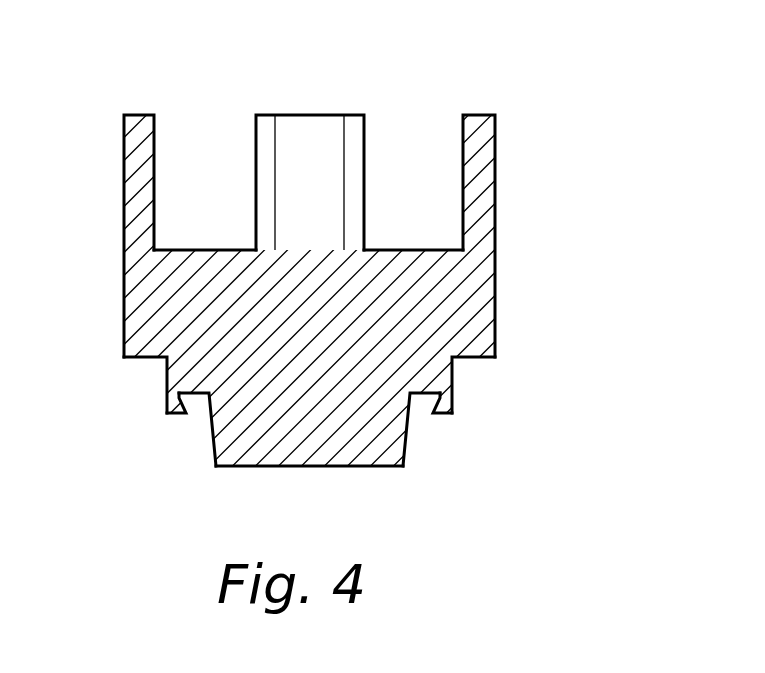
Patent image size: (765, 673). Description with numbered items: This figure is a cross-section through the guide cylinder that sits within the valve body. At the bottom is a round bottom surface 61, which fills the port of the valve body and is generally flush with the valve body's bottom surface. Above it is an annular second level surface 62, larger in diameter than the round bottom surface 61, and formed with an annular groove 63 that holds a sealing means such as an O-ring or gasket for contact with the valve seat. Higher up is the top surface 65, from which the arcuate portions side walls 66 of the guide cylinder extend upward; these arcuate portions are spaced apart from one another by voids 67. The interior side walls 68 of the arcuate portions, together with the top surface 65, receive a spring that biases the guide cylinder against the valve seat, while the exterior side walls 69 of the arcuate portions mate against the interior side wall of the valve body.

The round bottom surface 61 is at (292, 467).
The annular second level surface 62 is at (443, 413).
The annular groove 63 is at (422, 403).
The top surface 65 is at (418, 312).
The arcuate portions side walls 66 is at (313, 143).
The voids 67 is at (401, 188).
The interior side walls 68 is at (154, 172).
The exterior side walls 69 is at (495, 190).